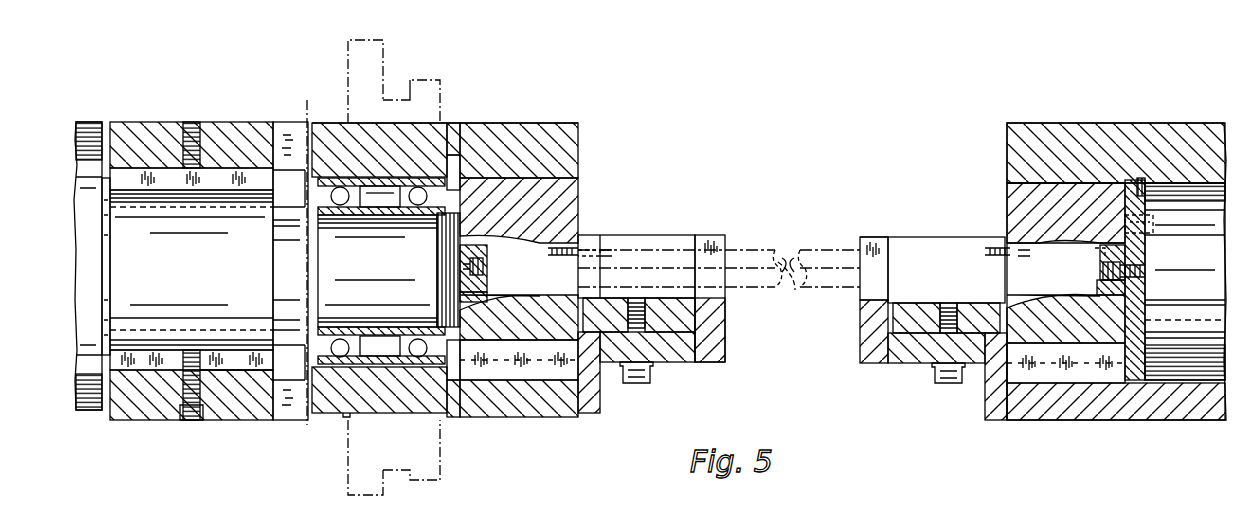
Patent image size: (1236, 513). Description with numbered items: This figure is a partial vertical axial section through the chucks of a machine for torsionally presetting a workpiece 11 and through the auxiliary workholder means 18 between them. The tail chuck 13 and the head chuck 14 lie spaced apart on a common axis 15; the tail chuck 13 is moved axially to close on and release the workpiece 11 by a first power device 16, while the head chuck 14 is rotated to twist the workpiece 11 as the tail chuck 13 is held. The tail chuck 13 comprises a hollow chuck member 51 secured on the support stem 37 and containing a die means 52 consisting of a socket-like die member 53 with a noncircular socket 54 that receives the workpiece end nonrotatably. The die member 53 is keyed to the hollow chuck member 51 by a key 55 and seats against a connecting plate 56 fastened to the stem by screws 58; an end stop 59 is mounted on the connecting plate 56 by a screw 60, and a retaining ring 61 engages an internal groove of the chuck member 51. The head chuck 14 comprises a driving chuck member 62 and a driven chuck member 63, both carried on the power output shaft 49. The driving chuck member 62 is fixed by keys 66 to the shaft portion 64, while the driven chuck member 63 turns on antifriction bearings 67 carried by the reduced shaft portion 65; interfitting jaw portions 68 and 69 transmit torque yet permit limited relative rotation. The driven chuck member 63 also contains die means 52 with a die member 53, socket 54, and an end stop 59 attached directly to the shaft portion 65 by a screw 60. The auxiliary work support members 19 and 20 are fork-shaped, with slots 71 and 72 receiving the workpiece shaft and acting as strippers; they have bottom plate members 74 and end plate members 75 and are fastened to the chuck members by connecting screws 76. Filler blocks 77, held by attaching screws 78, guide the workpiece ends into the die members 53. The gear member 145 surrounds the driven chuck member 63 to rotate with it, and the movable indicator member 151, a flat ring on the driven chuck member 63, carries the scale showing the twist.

The workpiece 11 is at (758, 247).
The tail chuck 13 is at (1046, 121).
The head chuck 14 is at (511, 117).
The common axis 15 is at (803, 288).
The first power device 16 is at (87, 121).
The auxiliary workholder means 18 is at (868, 240).
The auxiliary work support member 19 is at (860, 332).
The auxiliary work support member 20 is at (717, 320).
The support stem 37 is at (1195, 185).
The power output shaft 49 is at (145, 370).
The hollow chuck member 51 is at (1094, 121).
The die means 52 is at (582, 185).
The die member 53 is at (582, 205).
The socket 54 is at (578, 230).
The key 55 is at (1053, 385).
The connecting plate 56 is at (1125, 292).
The screws 58 is at (1153, 228).
The end stop 59 is at (487, 287).
The screw 60 is at (483, 265).
The retaining ring 61 is at (1130, 183).
The driving chuck member 62 is at (262, 121).
The driven chuck member 63 is at (548, 122).
The shaft portion 64 is at (235, 372).
The shaft portion 65 is at (410, 258).
The keys 66 is at (188, 375).
The antifriction bearings 67 is at (410, 348).
The jaw portion 68 is at (290, 135).
The jaw portion 69 is at (308, 121).
The slot 71 is at (858, 240).
The slot 72 is at (712, 236).
The bottom plate member 74 is at (900, 363).
The end plate member 75 is at (580, 414).
The connecting screws 76 is at (612, 245).
The filler blocks 77 is at (665, 298).
The attaching screws 78 is at (650, 378).
The gear member 145 is at (372, 37).
The movable indicator member 151 is at (405, 62).